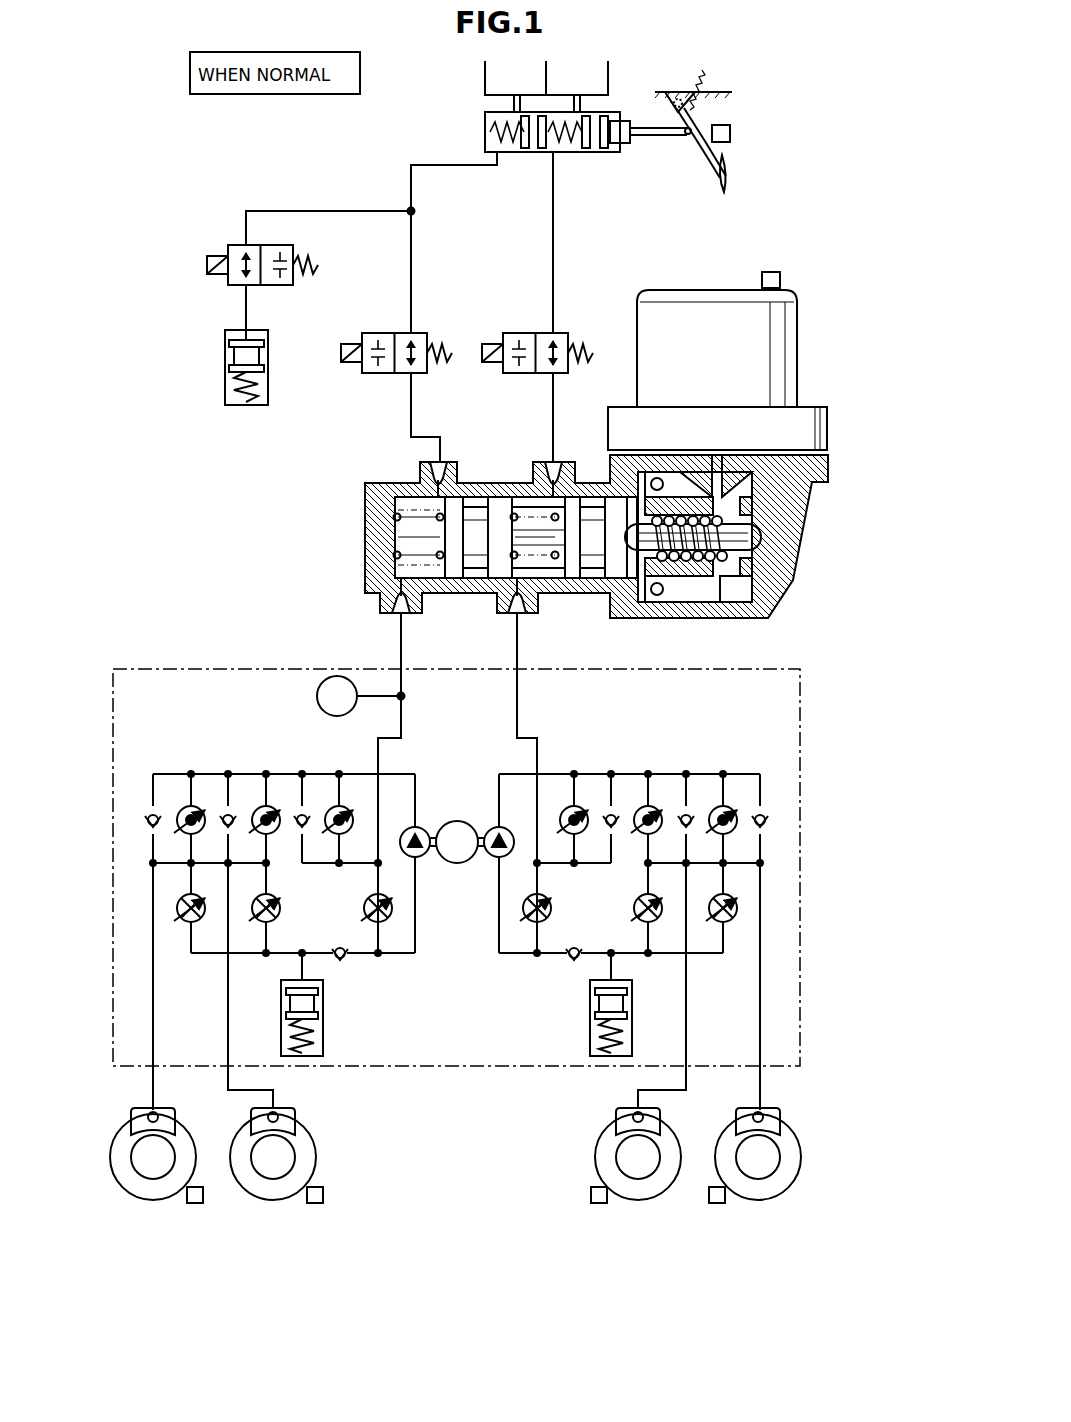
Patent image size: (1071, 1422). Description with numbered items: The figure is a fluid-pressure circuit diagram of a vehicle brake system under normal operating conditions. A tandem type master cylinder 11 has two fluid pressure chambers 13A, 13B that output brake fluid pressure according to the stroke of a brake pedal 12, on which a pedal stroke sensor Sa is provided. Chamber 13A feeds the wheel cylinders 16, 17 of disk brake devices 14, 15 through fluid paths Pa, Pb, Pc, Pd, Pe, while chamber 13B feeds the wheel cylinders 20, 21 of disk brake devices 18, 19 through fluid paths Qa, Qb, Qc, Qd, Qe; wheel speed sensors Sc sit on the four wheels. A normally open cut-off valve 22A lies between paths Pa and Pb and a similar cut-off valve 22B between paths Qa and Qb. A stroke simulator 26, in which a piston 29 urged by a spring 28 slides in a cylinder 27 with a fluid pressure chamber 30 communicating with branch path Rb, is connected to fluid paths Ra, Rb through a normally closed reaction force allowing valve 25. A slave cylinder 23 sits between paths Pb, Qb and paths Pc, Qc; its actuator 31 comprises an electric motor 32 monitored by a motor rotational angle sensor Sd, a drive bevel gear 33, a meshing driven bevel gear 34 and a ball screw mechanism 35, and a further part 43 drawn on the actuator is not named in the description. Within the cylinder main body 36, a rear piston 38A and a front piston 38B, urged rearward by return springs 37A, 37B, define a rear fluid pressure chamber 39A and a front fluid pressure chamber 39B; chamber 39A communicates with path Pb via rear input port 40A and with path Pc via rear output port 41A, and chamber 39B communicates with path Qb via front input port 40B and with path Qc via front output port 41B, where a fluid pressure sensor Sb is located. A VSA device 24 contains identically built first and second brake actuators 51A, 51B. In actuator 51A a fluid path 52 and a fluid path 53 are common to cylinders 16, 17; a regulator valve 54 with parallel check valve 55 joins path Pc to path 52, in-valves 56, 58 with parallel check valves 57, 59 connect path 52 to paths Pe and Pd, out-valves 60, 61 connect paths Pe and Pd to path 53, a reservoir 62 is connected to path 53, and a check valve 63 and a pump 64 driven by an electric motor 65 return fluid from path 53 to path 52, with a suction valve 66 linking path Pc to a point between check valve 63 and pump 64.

The master cylinder 11 is at (596, 90).
The brake pedal 12 is at (728, 182).
The fluid pressure chamber 13A is at (565, 152).
The fluid pressure chamber 13B is at (500, 152).
The disk brake device 14 is at (595, 1157).
The disk brake device 15 is at (804, 1157).
The wheel cylinder 16 is at (632, 1112).
The wheel cylinder 17 is at (765, 1112).
The disk brake device 18 is at (320, 1157).
The disk brake device 19 is at (107, 1157).
The wheel cylinder 20 is at (280, 1112).
The wheel cylinder 21 is at (148, 1114).
The cut-off valve 22A is at (562, 330).
The cut-off valve 22B is at (420, 330).
The slave cylinder 23 is at (366, 476).
The VSA device 24 is at (183, 665).
The reaction force allowing valve 25 is at (240, 244).
The stroke simulator 26 is at (275, 352).
The cylinder 27 is at (268, 380).
The spring 28 is at (251, 400).
The piston 29 is at (240, 355).
The fluid pressure chamber 30 is at (258, 335).
The actuator 31 is at (742, 592).
The electric motor 32 is at (782, 380).
The drive bevel gear 33 is at (742, 472).
The driven bevel gear 34 is at (700, 590).
The ball screw mechanism 35 is at (672, 572).
The cylinder main body 36 is at (533, 500).
The return spring 37A is at (550, 562).
The return spring 37B is at (400, 557).
The rear piston 38A is at (598, 525).
The front piston 38B is at (478, 520).
The rear fluid pressure chamber 39A is at (537, 520).
The front fluid pressure chamber 39B is at (408, 522).
The rear input port 40A is at (553, 462).
The front input port 40B is at (432, 462).
The rear output port 41A is at (522, 614).
The front output port 41B is at (398, 612).
The electric motor gear 43 is at (676, 497).
The first brake actuator 51A is at (772, 930).
The second brake actuator 51B is at (146, 930).
The fluid path 52 is at (228, 772).
The fluid path 53 is at (216, 955).
The regulator valve 54 is at (336, 808).
The check valve 55 is at (300, 812).
The in-valve 56 is at (183, 812).
The check valve 57 is at (148, 816).
The in-valve 58 is at (262, 808).
The check valve 59 is at (227, 812).
The out-valve 60 is at (188, 924).
The out-valve 61 is at (275, 915).
The reservoir 62 is at (326, 1022).
The check valve 63 is at (345, 962).
The pump 64 is at (425, 858).
The electric motor 65 is at (457, 820).
The suction valve 66 is at (368, 903).
The pedal stroke sensor Sa is at (722, 125).
The fluid pressure sensor Sb is at (318, 696).
The wheel speed sensor Sc is at (200, 1203).
The motor rotational angle sensor Sd is at (773, 272).
The fluid path Pa is at (560, 256).
The fluid path Pb is at (556, 409).
The fluid path Pc is at (518, 702).
The fluid path Pd is at (688, 1080).
The fluid path Pe is at (762, 1085).
The fluid path Qa is at (409, 282).
The fluid path Qb is at (408, 392).
The fluid path Qc is at (404, 648).
The fluid path Qd is at (228, 1082).
The fluid path Qe is at (152, 1085).
The fluid path Ra is at (320, 211).
The fluid path Rb is at (243, 311).